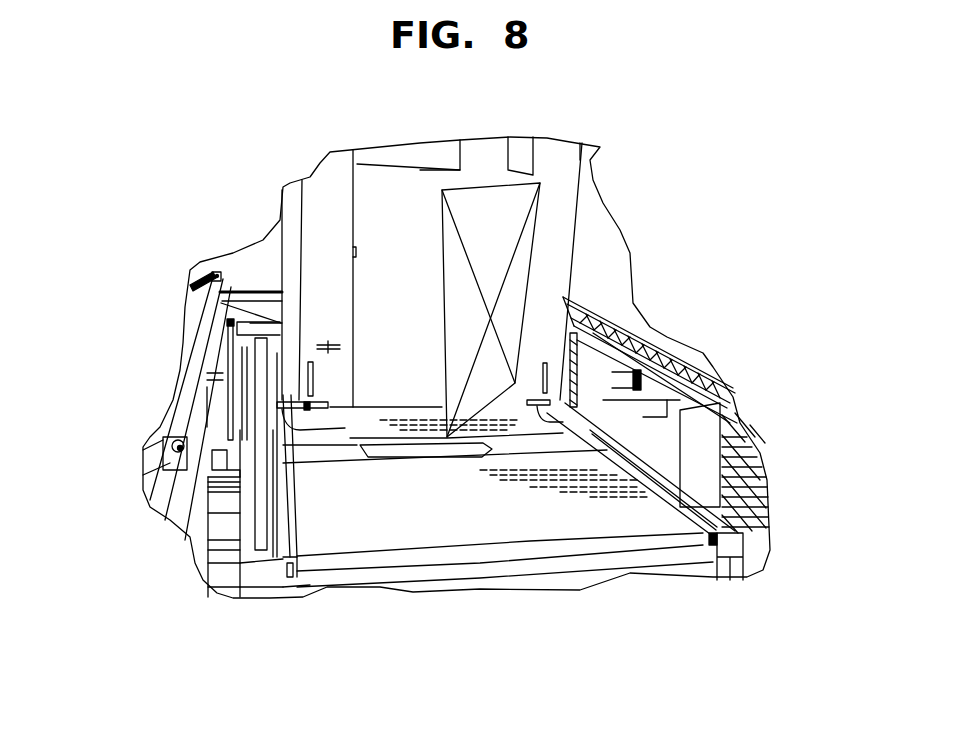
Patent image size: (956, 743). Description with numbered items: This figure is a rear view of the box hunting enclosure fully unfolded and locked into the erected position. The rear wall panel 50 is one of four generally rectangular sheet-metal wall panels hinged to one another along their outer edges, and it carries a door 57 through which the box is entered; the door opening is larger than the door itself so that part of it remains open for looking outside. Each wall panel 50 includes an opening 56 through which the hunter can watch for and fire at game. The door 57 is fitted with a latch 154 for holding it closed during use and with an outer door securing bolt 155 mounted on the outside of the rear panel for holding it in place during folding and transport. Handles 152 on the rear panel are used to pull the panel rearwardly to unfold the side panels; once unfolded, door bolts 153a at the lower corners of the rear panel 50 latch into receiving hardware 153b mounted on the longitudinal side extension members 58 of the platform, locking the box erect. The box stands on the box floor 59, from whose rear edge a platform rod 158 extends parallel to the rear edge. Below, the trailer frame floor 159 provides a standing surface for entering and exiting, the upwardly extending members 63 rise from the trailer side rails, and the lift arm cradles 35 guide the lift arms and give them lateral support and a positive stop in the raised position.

The lift arm cradle 35 is at (223, 352).
The wall panel 50 is at (560, 168).
The opening 56 is at (415, 155).
The door 57 is at (500, 220).
The longitudinal side extension member 58 is at (283, 530).
The box floor 59 is at (347, 427).
The upwardly extending member 63 is at (172, 470).
The handle 152 is at (313, 373).
The door bolt 153a is at (286, 427).
The receiving hardware 153b is at (303, 403).
The latch 154 is at (353, 252).
The outer door securing bolt 155 is at (330, 347).
The platform rod 158 is at (430, 457).
The trailer frame floor 159 is at (613, 517).